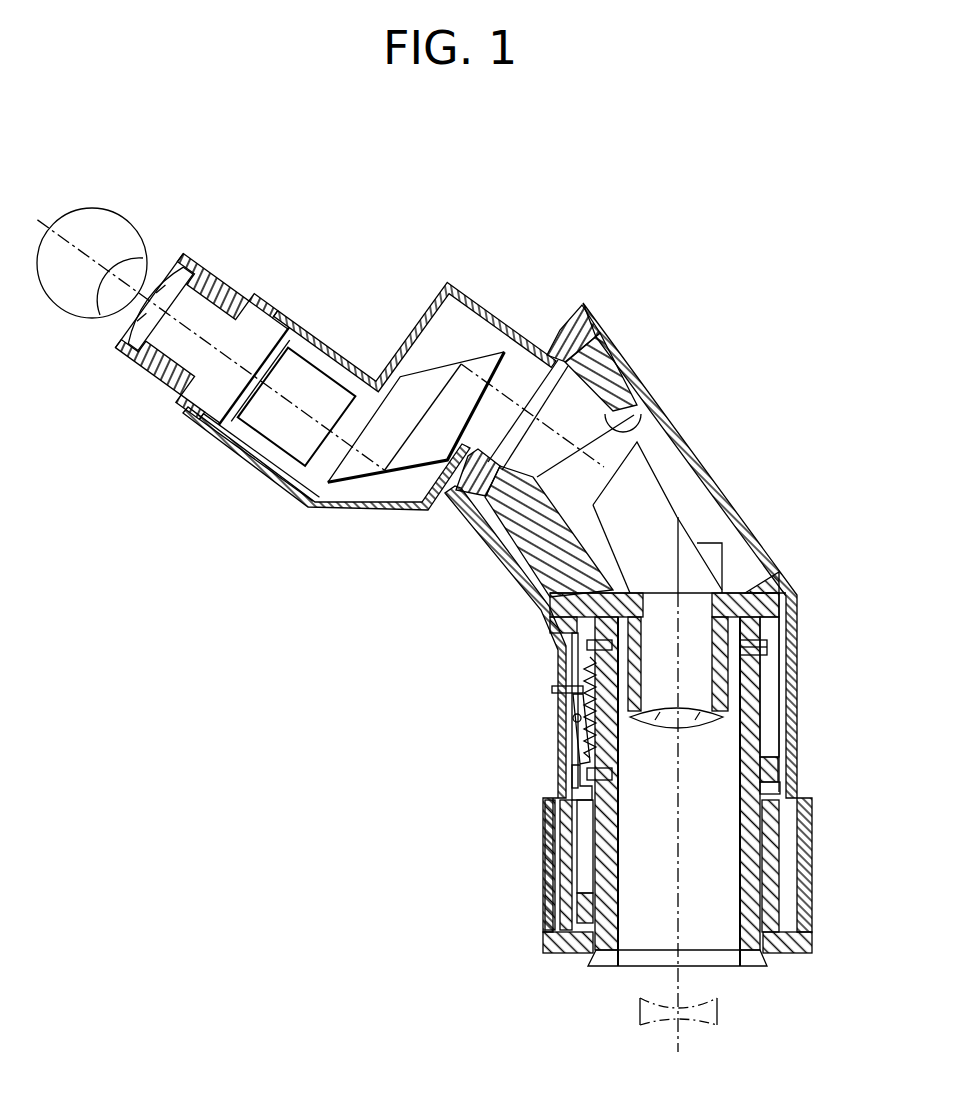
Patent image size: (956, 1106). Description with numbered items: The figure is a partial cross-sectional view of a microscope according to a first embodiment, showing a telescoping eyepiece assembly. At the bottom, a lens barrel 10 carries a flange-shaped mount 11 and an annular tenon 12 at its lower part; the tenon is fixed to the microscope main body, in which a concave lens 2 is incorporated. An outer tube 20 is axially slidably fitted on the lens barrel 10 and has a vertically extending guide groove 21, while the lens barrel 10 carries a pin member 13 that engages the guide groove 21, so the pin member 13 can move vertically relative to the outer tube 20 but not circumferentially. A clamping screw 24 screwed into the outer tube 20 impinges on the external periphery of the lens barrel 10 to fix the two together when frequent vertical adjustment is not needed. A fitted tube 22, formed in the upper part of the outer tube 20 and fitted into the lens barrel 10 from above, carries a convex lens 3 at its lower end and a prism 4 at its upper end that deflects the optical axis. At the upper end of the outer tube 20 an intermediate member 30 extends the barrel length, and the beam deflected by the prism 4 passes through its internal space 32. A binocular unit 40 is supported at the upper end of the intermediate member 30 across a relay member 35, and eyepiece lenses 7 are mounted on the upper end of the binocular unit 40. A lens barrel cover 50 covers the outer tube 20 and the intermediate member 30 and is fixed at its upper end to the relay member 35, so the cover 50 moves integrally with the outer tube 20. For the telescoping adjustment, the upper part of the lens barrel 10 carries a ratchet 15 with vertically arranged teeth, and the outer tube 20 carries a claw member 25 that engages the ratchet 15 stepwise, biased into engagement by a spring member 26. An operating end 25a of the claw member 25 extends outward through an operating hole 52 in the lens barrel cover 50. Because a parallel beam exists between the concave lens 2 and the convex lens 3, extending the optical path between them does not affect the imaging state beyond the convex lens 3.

The concave lens 2 is at (653, 1027).
The convex lens 3 is at (735, 714).
The prism 4 is at (658, 473).
The eyepiece lenses 7 is at (200, 293).
The lens barrel 10 is at (665, 893).
The flange-shaped mount 11 is at (562, 955).
The annular tenon 12 is at (600, 968).
The pin member 13 is at (769, 646).
The ratchet 15 is at (586, 660).
The outer tube 20 is at (782, 955).
The guide groove 21 is at (772, 683).
The fitted tube 22 is at (628, 712).
The clamping screw 24 is at (780, 778).
The claw member 25 is at (574, 720).
The operating end 25a is at (552, 688).
The spring member 26 is at (572, 780).
The intermediate member 30 is at (610, 378).
The internal space 32 is at (643, 416).
The relay member 35 is at (584, 320).
The binocular unit 40 is at (462, 300).
The lens barrel cover 50 is at (490, 540).
The operating hole 52 is at (578, 698).